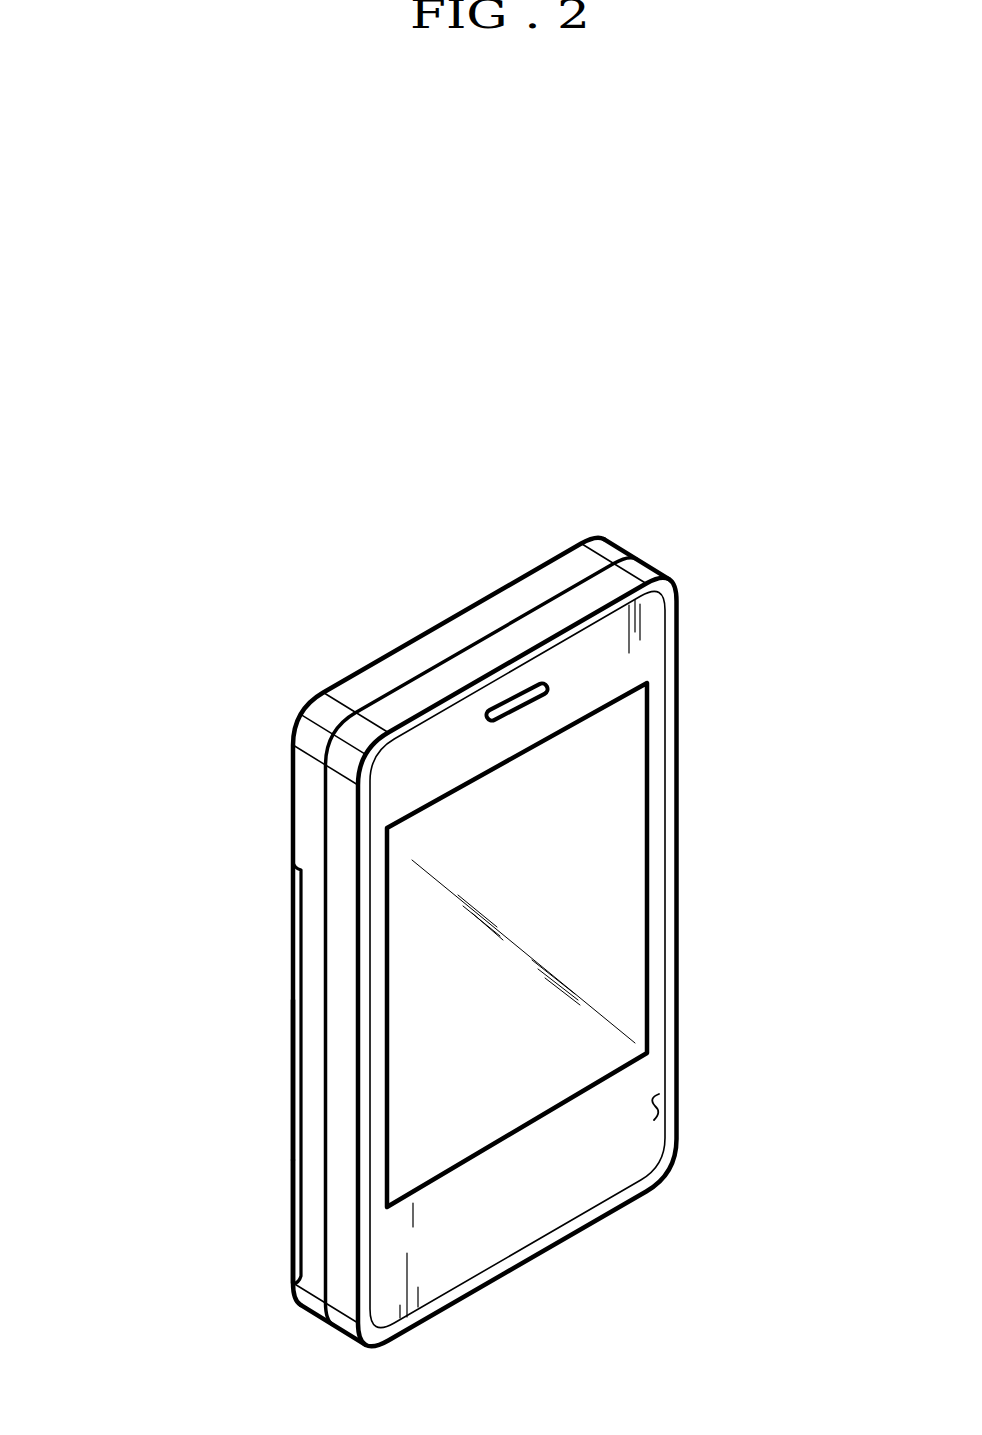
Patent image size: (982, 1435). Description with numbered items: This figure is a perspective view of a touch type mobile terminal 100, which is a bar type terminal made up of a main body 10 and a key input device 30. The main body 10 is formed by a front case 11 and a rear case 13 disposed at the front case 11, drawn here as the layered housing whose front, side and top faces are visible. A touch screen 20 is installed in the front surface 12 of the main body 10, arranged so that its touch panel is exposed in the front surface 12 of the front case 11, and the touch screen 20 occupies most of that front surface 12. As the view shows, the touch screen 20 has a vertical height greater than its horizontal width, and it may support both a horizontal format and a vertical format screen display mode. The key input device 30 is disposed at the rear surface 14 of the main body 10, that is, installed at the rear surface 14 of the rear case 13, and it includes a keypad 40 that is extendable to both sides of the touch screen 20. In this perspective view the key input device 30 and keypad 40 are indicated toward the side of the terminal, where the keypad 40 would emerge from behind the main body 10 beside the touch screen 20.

The mobile terminal 100 is at (124, 478).
The main body 10 is at (723, 463).
The front case 11 is at (695, 615).
The front surface 12 is at (663, 1103).
The rear case 13 is at (632, 541).
The rear surface 14 is at (297, 938).
The touch screen 20 is at (628, 825).
The key input device 30 is at (272, 1202).
The keypad 40 is at (293, 1082).